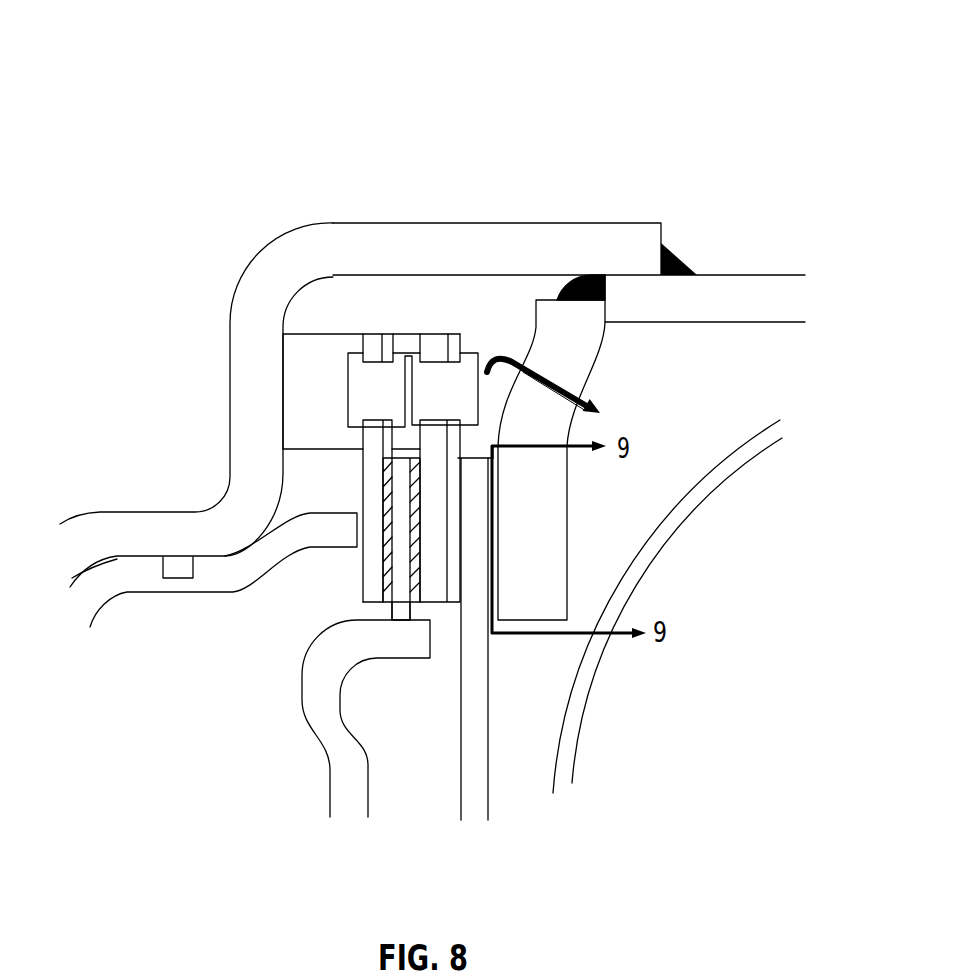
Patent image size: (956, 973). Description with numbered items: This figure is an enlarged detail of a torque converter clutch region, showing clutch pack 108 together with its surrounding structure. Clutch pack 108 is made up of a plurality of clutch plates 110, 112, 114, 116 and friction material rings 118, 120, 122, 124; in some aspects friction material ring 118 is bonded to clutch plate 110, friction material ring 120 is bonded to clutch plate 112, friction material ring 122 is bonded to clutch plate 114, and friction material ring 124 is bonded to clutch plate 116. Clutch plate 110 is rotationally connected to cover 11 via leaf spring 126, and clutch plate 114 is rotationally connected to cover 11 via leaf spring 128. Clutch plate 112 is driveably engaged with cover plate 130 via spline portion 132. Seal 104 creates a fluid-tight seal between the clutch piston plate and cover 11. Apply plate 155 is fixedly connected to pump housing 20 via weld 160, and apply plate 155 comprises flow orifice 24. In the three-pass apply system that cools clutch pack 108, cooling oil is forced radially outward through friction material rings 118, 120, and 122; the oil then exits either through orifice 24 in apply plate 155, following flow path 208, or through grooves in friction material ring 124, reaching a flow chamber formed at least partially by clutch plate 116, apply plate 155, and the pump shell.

The cover 11 is at (75, 541).
The pump housing 20 is at (734, 296).
The flow orifice 24 is at (563, 388).
The seal 104 is at (172, 558).
The clutch pack 108 is at (428, 308).
The clutch plate 110 is at (370, 586).
The clutch plate 112 is at (398, 537).
The clutch plate 114 is at (433, 433).
The clutch plate 116 is at (474, 466).
The friction material ring 118 is at (385, 560).
The friction material ring 120 is at (413, 483).
The friction material ring 122 is at (455, 490).
The friction material ring 124 is at (495, 477).
The leaf spring 126 is at (330, 347).
The leaf spring 128 is at (403, 343).
The cover plate 130 is at (343, 796).
The spline portion 132 is at (432, 609).
The apply plate 155 is at (578, 356).
The weld 160 is at (582, 276).
The flow path 208 is at (470, 472).